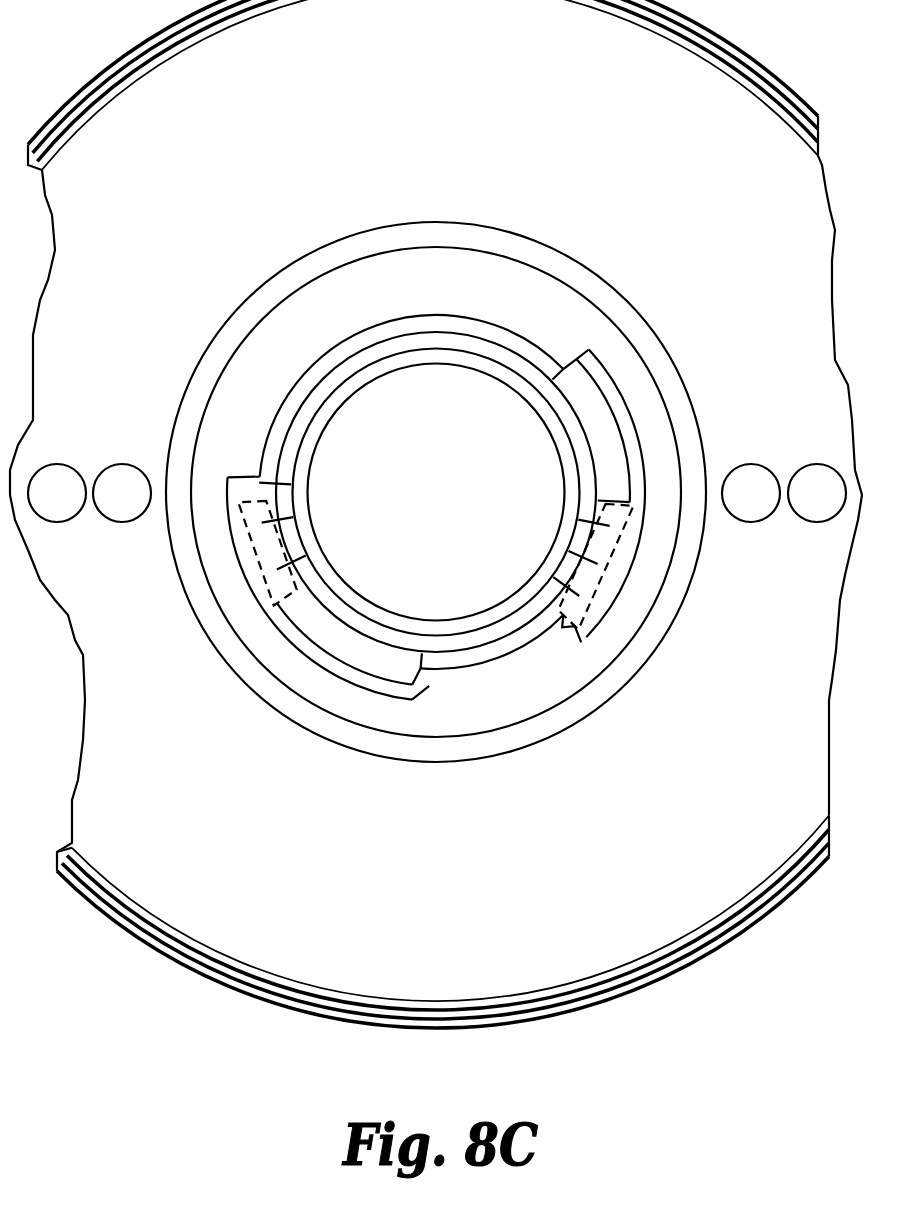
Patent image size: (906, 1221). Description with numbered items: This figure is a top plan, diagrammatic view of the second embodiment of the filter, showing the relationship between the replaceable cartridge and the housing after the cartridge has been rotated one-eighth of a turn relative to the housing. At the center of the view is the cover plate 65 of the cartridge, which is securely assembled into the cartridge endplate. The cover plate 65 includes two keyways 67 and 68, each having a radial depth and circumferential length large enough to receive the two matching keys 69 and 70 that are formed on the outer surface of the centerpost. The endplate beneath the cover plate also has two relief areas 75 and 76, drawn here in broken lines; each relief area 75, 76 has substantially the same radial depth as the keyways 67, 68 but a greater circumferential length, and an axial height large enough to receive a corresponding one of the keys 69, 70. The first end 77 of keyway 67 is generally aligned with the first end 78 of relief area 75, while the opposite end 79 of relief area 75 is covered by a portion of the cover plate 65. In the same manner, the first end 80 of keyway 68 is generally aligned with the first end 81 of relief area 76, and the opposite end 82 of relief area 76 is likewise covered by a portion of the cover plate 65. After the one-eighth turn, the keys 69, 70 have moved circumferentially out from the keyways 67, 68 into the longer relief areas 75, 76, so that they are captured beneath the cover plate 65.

The cover plate 65 is at (497, 712).
The keyway 67 is at (606, 417).
The keyway 68 is at (373, 667).
The key 69 is at (616, 557).
The key 70 is at (284, 606).
The relief area 75 is at (625, 503).
The relief area 76 is at (247, 587).
The first end of keyway 77 is at (565, 364).
The first end of relief area 78 is at (588, 351).
The opposite end of relief area 79 is at (585, 640).
The first end of keyway 80 is at (422, 688).
The first end of relief area 81 is at (428, 684).
The opposite end of relief area 82 is at (247, 477).